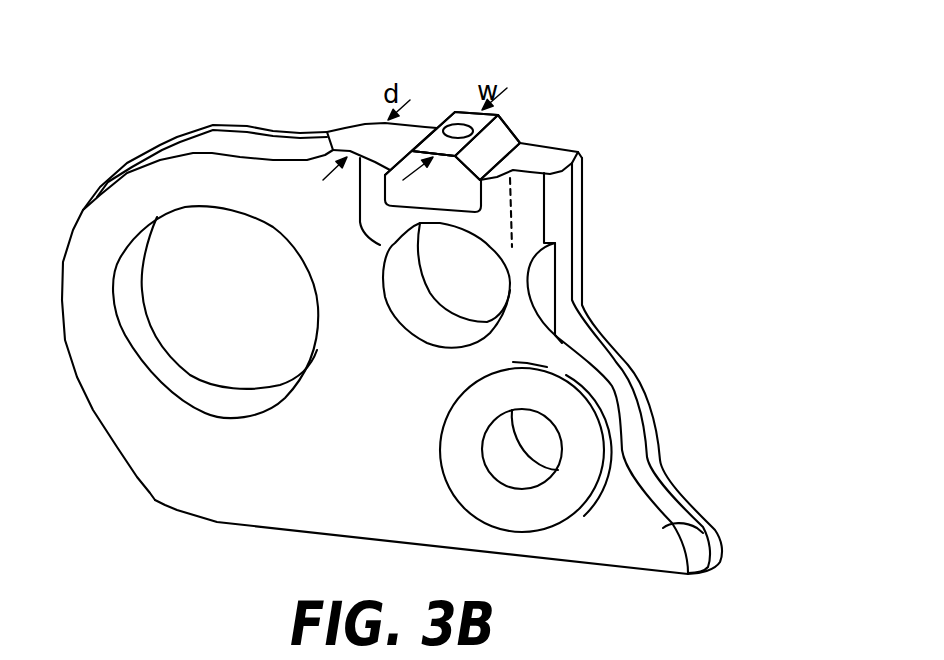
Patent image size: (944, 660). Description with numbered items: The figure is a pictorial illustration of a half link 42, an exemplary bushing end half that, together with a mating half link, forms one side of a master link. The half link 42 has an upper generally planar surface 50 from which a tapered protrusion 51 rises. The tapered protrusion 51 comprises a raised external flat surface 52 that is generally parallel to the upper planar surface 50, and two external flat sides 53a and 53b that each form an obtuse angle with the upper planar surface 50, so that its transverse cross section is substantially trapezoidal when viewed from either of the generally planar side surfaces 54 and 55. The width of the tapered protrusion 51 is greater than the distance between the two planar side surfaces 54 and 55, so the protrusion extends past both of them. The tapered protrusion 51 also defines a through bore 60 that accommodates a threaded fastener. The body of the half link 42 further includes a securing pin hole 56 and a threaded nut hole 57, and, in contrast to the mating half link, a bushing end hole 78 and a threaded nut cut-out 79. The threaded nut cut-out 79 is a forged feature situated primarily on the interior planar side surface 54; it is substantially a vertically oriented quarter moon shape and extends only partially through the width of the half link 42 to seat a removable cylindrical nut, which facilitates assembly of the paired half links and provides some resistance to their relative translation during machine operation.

The half link 42 is at (168, 493).
The upper planar surface 50 is at (340, 133).
The tapered protrusion 51 is at (501, 111).
The raised external flat surface 52 is at (465, 112).
The external flat side 53a is at (497, 140).
The external flat side 53b is at (443, 122).
The planar side surface 54 is at (673, 523).
The planar side surface 55 is at (675, 477).
The securing pin hole 56 is at (503, 453).
The threaded nut hole 57 is at (412, 293).
The through bore 60 is at (448, 122).
The bushing end hole 78 is at (220, 395).
The threaded nut cut-out 79 is at (547, 287).